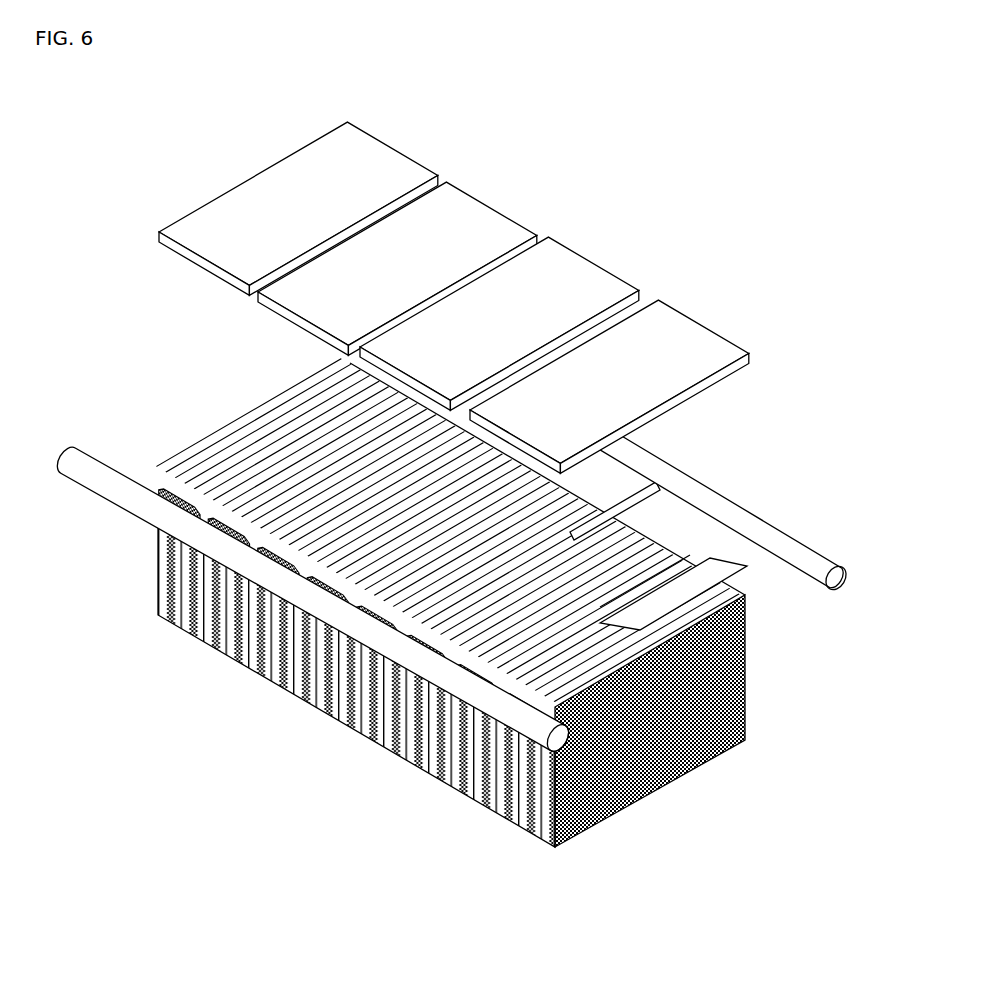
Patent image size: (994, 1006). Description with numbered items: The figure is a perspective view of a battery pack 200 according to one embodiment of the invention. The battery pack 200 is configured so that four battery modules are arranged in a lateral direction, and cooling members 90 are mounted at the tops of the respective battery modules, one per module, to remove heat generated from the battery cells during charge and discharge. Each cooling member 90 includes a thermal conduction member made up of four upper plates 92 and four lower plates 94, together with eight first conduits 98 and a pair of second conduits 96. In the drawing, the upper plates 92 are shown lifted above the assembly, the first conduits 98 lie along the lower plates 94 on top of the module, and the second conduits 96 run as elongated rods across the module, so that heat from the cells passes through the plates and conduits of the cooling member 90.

The battery pack 200 is at (66, 159).
The cooling member 90 is at (472, 298).
The upper plate 92 is at (627, 386).
The lower plate 94 is at (724, 607).
The second conduit 96 is at (803, 532).
The first conduit 98 is at (744, 572).